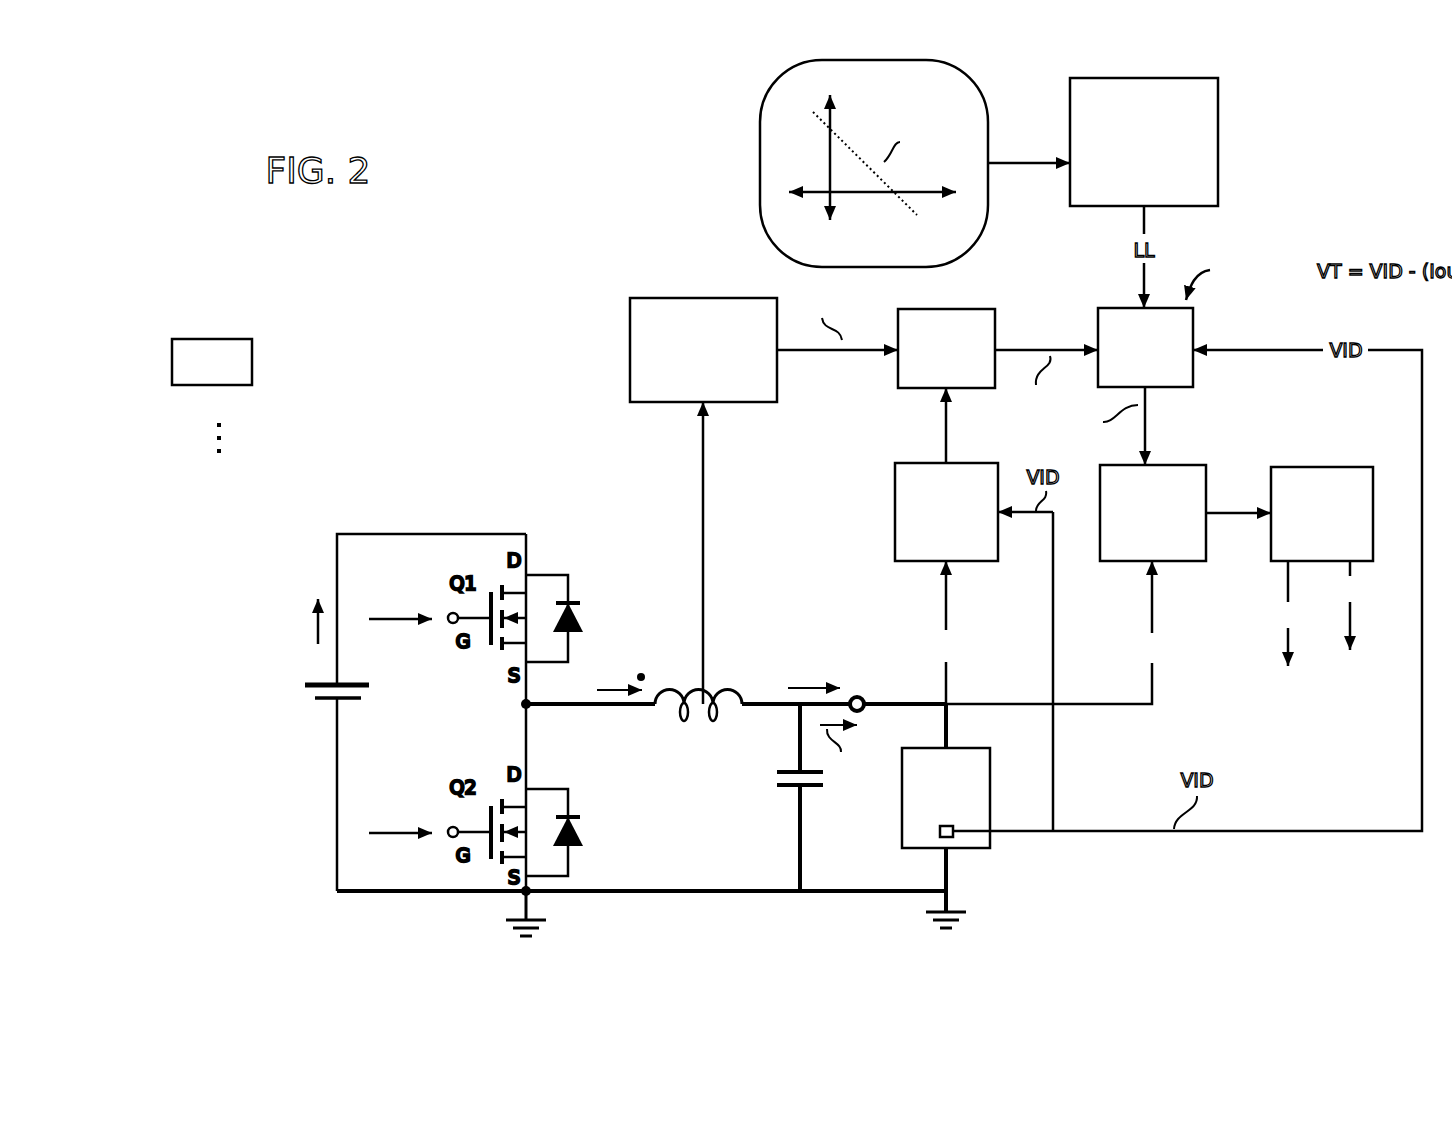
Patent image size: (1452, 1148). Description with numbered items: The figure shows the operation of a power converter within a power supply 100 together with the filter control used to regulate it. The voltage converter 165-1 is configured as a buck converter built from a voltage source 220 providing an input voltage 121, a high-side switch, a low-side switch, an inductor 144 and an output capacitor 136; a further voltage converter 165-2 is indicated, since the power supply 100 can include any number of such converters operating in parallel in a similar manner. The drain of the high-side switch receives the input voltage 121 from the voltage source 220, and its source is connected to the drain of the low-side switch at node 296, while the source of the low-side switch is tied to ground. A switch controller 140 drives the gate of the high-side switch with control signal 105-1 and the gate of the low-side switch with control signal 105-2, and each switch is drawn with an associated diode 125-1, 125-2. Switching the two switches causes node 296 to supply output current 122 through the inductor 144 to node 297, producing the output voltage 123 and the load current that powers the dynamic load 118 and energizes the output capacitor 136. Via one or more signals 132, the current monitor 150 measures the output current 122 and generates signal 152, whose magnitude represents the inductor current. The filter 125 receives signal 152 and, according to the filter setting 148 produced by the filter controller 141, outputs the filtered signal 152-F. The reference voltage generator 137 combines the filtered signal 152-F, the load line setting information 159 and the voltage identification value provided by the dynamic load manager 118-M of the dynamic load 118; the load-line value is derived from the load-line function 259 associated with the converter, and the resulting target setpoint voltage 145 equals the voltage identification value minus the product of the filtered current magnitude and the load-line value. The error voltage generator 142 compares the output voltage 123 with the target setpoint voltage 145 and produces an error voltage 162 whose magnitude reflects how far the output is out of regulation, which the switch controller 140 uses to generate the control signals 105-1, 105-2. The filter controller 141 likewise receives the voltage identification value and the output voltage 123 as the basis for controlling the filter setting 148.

The load-line function 259 is at (758, 142).
The load line setting information 159 is at (1144, 142).
The current monitor 150 is at (703, 350).
The signal 152 is at (828, 357).
The signals 132 is at (700, 480).
The filter 125 is at (946, 348).
The filtered signal 152-F is at (1033, 343).
The reference voltage generator 137 is at (1145, 347).
The target setpoint voltage 145 is at (1152, 428).
The filter controller 141 is at (946, 512).
The filter setting 148 is at (937, 445).
The error voltage generator 142 is at (1153, 513).
The error voltage 162 is at (1235, 522).
The switch controller 140 is at (1322, 514).
The control signal 105-1 is at (834, 613).
The control signal 105-2 is at (865, 697).
The voltage converter 165-2 is at (212, 362).
The voltage converter 165-1 is at (243, 571).
The input voltage 121 is at (312, 627).
The voltage source 220 is at (303, 688).
The power supply 100 is at (268, 842).
The body diode of Q1 125-1 is at (593, 585).
The body diode of Q2 125-2 is at (595, 825).
The node 296 is at (520, 704).
The output current 122 is at (612, 686).
The inductor 144 is at (743, 694).
The output node 297 is at (772, 712).
The output voltage 123 is at (810, 682).
The output capacitor 136 is at (838, 783).
The dynamic load 118 is at (946, 776).
The dynamic load manager 118-M is at (938, 832).